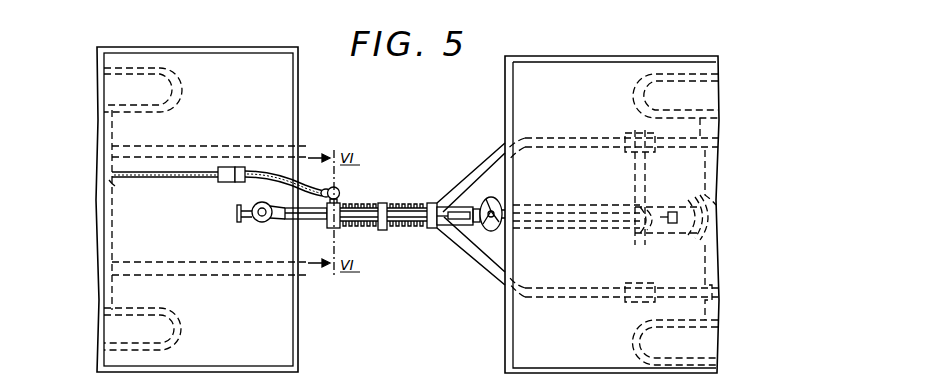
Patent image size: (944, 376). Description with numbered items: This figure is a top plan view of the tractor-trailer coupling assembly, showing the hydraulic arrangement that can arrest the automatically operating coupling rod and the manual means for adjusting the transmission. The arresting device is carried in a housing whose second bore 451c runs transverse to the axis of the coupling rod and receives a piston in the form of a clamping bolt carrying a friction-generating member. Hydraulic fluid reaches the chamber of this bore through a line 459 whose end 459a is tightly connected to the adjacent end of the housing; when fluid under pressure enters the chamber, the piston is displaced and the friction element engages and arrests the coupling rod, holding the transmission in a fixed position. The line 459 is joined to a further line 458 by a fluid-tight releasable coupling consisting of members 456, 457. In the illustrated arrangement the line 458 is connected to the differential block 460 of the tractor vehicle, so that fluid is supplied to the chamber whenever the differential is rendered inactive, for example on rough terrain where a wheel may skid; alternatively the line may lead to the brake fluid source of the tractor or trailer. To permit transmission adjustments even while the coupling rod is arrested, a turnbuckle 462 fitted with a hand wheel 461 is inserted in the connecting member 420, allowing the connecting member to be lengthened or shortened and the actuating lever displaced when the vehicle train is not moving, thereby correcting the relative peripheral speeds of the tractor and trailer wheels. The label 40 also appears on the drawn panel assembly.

The housing / panel assembly 40 is at (660, 33).
The connecting member 420 is at (478, 210).
The coupling member 456 is at (228, 167).
The coupling member 457 is at (241, 167).
The line 458 is at (140, 171).
The line 459 is at (268, 186).
The end of line 459a is at (339, 367).
The differential block 460 is at (116, 186).
The hand wheel 461 is at (493, 231).
The turnbuckle 462 is at (470, 228).
The second bore 451c is at (461, 369).